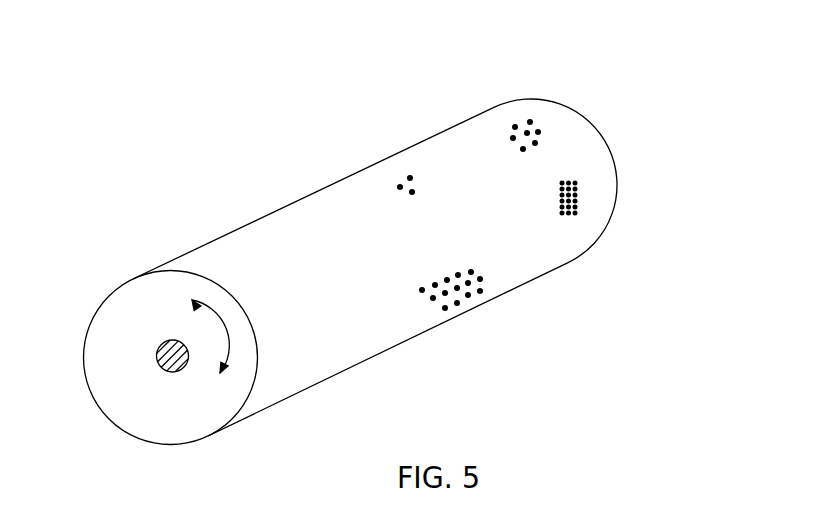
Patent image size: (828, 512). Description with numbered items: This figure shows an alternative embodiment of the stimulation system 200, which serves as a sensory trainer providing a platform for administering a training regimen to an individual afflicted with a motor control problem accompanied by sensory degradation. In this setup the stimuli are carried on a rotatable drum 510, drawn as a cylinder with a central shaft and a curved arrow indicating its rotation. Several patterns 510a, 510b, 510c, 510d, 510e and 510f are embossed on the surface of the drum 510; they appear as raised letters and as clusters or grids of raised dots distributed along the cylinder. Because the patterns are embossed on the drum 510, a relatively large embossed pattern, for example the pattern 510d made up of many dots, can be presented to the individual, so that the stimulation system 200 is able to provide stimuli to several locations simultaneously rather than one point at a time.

The stimulation system 200 is at (197, 172).
The drum 510 is at (564, 266).
The pattern 510a is at (326, 336).
The pattern 510b is at (302, 248).
The pattern 510c is at (400, 173).
The pattern 510d is at (470, 302).
The pattern 510e is at (520, 122).
The pattern 510f is at (580, 213).